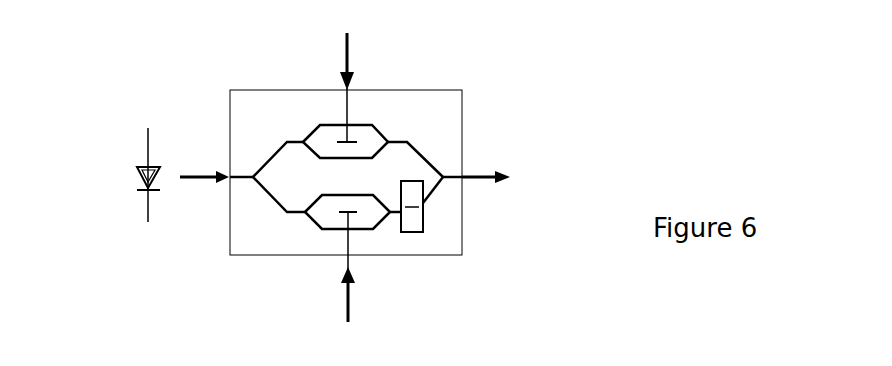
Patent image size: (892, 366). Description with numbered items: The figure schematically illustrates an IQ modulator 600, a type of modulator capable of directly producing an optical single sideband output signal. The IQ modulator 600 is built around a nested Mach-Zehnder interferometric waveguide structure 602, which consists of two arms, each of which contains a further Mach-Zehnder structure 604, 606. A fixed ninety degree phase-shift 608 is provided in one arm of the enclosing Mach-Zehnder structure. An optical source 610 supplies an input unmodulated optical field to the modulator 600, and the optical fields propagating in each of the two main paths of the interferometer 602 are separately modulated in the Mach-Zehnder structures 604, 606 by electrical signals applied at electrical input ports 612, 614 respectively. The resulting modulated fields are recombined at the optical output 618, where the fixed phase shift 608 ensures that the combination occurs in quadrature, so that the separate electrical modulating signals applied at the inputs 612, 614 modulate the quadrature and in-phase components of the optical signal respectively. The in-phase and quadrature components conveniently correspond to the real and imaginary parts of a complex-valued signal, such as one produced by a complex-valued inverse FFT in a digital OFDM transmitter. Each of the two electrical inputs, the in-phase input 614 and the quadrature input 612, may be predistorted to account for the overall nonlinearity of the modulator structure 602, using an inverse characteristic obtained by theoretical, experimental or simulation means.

The IQ modulator 600 is at (546, 113).
The nested Mach-Zehnder interferometric waveguide structure 602 is at (256, 142).
The Mach-Zehnder structure 604 is at (378, 133).
The Mach-Zehnder structure 606 is at (310, 223).
The fixed 90 degree phase-shift 608 is at (423, 222).
The optical source 610 is at (128, 144).
The electrical input port 612 is at (348, 62).
The electrical input port 614 is at (350, 315).
The optical output 618 is at (477, 173).